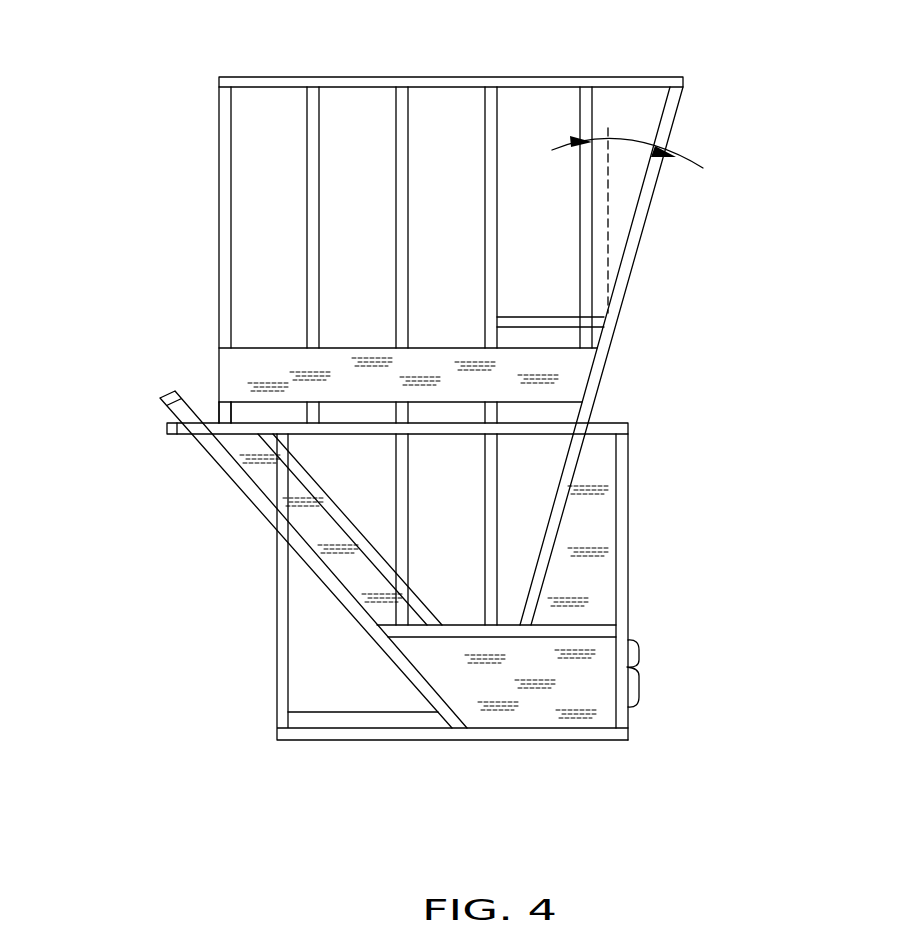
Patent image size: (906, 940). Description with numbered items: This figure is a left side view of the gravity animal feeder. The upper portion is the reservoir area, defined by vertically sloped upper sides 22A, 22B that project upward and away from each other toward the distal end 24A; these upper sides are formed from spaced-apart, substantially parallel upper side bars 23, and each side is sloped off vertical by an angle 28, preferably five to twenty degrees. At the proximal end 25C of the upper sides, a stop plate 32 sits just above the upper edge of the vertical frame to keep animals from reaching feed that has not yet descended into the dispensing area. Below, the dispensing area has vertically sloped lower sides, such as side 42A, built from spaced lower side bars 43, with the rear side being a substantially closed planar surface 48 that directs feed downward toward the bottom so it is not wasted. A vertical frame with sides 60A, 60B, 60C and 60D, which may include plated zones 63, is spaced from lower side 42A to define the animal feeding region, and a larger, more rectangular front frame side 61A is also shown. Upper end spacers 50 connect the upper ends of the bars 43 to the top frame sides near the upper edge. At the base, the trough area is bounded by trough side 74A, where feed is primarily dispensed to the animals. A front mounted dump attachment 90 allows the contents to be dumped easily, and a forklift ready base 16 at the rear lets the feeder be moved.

The distal end 24A is at (387, 78).
The upper side bar 23 is at (220, 122).
The vertically sloped upper side 22A is at (284, 170).
The angle 28 is at (633, 141).
The vertically sloped upper side 22B is at (671, 209).
The upper end spacer 50 is at (605, 422).
The stop plate 32 is at (282, 358).
The vertical frame side 60B is at (272, 398).
The proximal end 25C is at (215, 412).
The substantially closed planar surface 48 is at (172, 415).
The front frame side 61A is at (630, 463).
The vertical frame side 60C is at (567, 497).
The plated zone 63 is at (598, 523).
The lower side bar 43 is at (498, 558).
The vertically sloped lower side 42A is at (375, 496).
The vertical frame side 60A is at (318, 472).
The vertical frame side 60D is at (563, 627).
The front mounted dump attachment 90 is at (640, 672).
The trough side 74A is at (497, 692).
The forklift ready base 16 is at (345, 712).